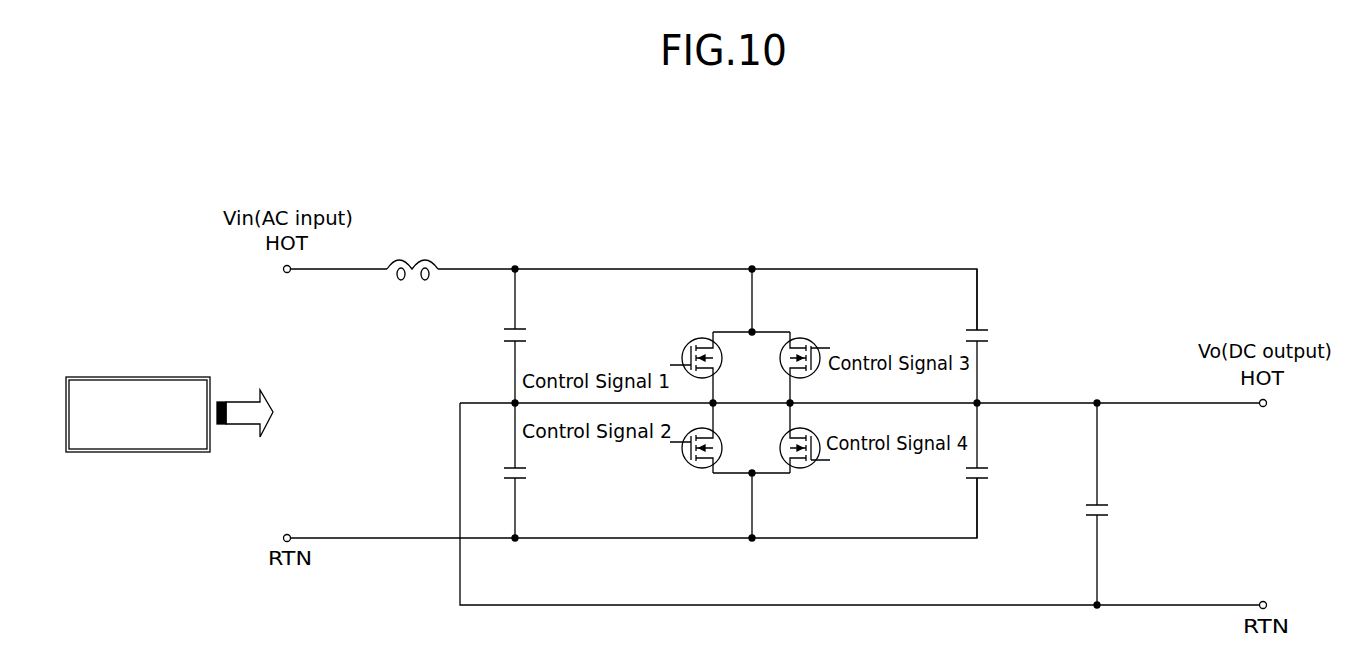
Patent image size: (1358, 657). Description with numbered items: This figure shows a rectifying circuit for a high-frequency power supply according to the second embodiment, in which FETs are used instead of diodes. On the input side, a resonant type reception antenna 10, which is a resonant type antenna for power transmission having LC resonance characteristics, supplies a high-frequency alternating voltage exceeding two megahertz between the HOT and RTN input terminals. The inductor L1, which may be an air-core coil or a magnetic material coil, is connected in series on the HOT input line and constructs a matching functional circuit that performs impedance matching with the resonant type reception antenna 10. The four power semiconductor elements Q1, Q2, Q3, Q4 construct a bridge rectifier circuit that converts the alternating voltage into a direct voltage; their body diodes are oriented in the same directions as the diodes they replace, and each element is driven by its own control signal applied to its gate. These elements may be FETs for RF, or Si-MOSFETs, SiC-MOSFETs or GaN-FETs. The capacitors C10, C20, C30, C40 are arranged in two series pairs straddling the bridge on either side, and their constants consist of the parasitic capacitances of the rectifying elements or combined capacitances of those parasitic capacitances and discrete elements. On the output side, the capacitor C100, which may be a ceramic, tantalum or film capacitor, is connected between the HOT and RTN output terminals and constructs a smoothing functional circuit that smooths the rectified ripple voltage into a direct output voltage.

The resonant type reception antenna 10 is at (143, 377).
The inductor L1 is at (412, 257).
The capacitor C10 is at (534, 336).
The capacitor C20 is at (534, 470).
The capacitor C30 is at (997, 336).
The capacitor C40 is at (997, 470).
The capacitor C100 is at (1122, 504).
The power semiconductor element Q1 is at (697, 354).
The power semiconductor element Q2 is at (696, 452).
The power semiconductor element Q3 is at (805, 354).
The power semiconductor element Q4 is at (805, 452).